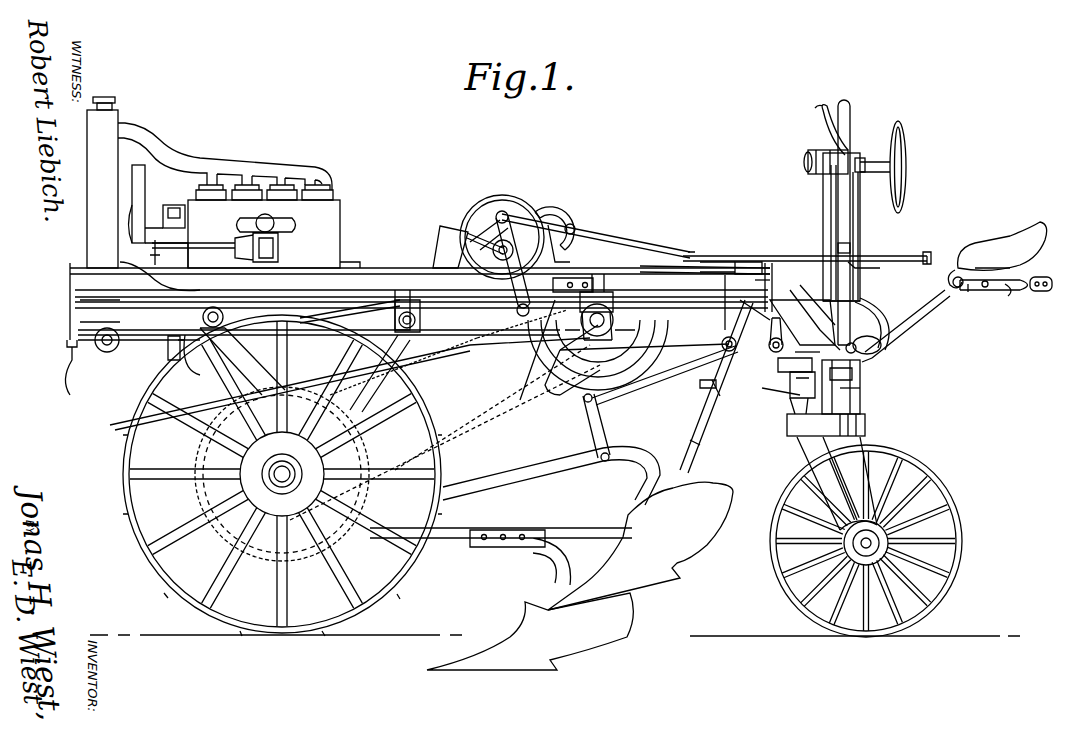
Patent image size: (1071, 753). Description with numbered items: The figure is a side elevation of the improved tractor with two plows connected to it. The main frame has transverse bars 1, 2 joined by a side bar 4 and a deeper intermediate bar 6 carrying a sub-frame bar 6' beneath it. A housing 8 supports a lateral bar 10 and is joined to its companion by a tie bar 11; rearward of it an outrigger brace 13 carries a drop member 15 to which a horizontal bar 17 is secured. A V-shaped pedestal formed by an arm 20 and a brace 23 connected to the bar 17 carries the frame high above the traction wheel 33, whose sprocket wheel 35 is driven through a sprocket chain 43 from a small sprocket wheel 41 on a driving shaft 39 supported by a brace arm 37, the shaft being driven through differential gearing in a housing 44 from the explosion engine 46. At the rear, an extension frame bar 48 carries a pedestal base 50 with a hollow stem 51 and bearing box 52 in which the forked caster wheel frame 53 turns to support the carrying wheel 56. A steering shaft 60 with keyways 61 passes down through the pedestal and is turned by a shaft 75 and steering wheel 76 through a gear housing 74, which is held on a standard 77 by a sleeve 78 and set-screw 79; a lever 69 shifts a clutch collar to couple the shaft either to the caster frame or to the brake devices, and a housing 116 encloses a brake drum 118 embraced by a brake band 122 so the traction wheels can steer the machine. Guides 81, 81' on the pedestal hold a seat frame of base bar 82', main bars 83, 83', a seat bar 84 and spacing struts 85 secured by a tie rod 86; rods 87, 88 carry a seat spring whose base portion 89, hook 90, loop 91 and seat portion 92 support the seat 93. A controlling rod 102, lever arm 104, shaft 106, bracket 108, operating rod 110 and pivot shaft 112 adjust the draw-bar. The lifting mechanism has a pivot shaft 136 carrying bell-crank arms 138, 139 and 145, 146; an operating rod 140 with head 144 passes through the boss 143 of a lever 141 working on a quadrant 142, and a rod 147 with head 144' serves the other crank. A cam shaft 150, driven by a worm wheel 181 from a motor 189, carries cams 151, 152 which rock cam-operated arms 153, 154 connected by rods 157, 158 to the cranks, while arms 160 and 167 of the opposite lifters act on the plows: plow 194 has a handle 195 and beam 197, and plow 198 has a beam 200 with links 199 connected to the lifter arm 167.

The transverse bar 1 is at (72, 287).
The transverse bar 2 is at (766, 288).
The side bar 4 is at (352, 266).
The intermediate bar 6 is at (77, 318).
The sub-frame bar 6' is at (76, 336).
The housing 8 is at (120, 262).
The lateral bar 10 is at (213, 310).
The tie bar 11 is at (210, 378).
The outrigger brace 13 is at (405, 292).
The drop member 15 is at (412, 302).
The horizontal bar 17 is at (418, 320).
The pedestal arm 20 is at (230, 390).
The brace 23 is at (360, 388).
The traction wheel 33 is at (124, 456).
The sprocket wheel 35 is at (370, 456).
The brace arm 37 is at (612, 300).
The driving shaft 39 is at (598, 318).
The small sprocket wheel 41 is at (520, 360).
The sprocket chain 43 is at (472, 438).
The housing 44 is at (568, 385).
The explosion engine 46 is at (342, 212).
The extension frame bar 48 is at (822, 332).
The pedestal base 50 is at (825, 375).
The hollow stem 51 is at (862, 403).
The bearing box 52 is at (866, 426).
The forked caster wheel frame 53 is at (815, 461).
The carrying wheel 56 is at (922, 472).
The steering shaft 60 is at (823, 202).
The longitudinal keyways 61 is at (831, 224).
The shifting and controlling lever 69 is at (880, 352).
The gear housing 74 is at (812, 165).
The shaft 75 is at (871, 172).
The steering wheel 76 is at (906, 168).
The standard 77 is at (858, 214).
The sleeve 78 is at (858, 162).
The set-screw 79 is at (865, 168).
The guide 81 is at (789, 376).
The guide 81' is at (871, 380).
The horizontal base bar 82' is at (862, 389).
The main bar 83 is at (917, 324).
The main bar 83' is at (915, 337).
The seat bar 84 is at (1022, 292).
The spacing struts 85 is at (1040, 277).
The tie rod 86 is at (778, 366).
The rod 87 is at (955, 272).
The rod 88 is at (986, 288).
The base portion 89 is at (968, 294).
The hook 90 is at (952, 281).
The loop 91 is at (1008, 298).
The seat portion 92 is at (983, 268).
The seat 93 is at (1006, 236).
The controlling rod 102 is at (455, 356).
The lever arm 104 is at (736, 346).
The shaft 106 is at (775, 352).
The bracket 108 is at (800, 312).
The operating rod 110 is at (765, 400).
The pivot shaft 112 is at (793, 398).
The housing 116 is at (598, 353).
The brake drum 118 is at (448, 352).
The brake band 122 is at (563, 398).
The pivot shaft 136 is at (712, 384).
The arm 138 is at (712, 262).
The arm 139 is at (700, 420).
The operating rod 140 is at (726, 262).
The lever 141 is at (828, 94).
The quadrant 142 is at (890, 320).
The boss 143 is at (852, 248).
The head 144 is at (807, 251).
The head 144' is at (926, 237).
The arm 145 is at (748, 262).
The arm 146 is at (705, 395).
The rod 147 is at (879, 274).
The cam shaft 150 is at (495, 245).
The cam 151 is at (480, 212).
The cam 152 is at (538, 212).
The cam-operated arm 153 is at (510, 266).
The cam-operated arm 154 is at (565, 292).
The connecting rod 157 is at (560, 226).
The connecting rod 158 is at (676, 250).
The arm 160 is at (690, 446).
The arm 167 is at (645, 390).
The worm wheel 181 is at (505, 212).
The small engine or motor 189 is at (440, 240).
The plow 194 is at (522, 612).
The handle 195 is at (594, 527).
The beam 197 is at (444, 548).
The plow 198 is at (660, 583).
The links 199 is at (593, 441).
The beam 200 is at (484, 486).